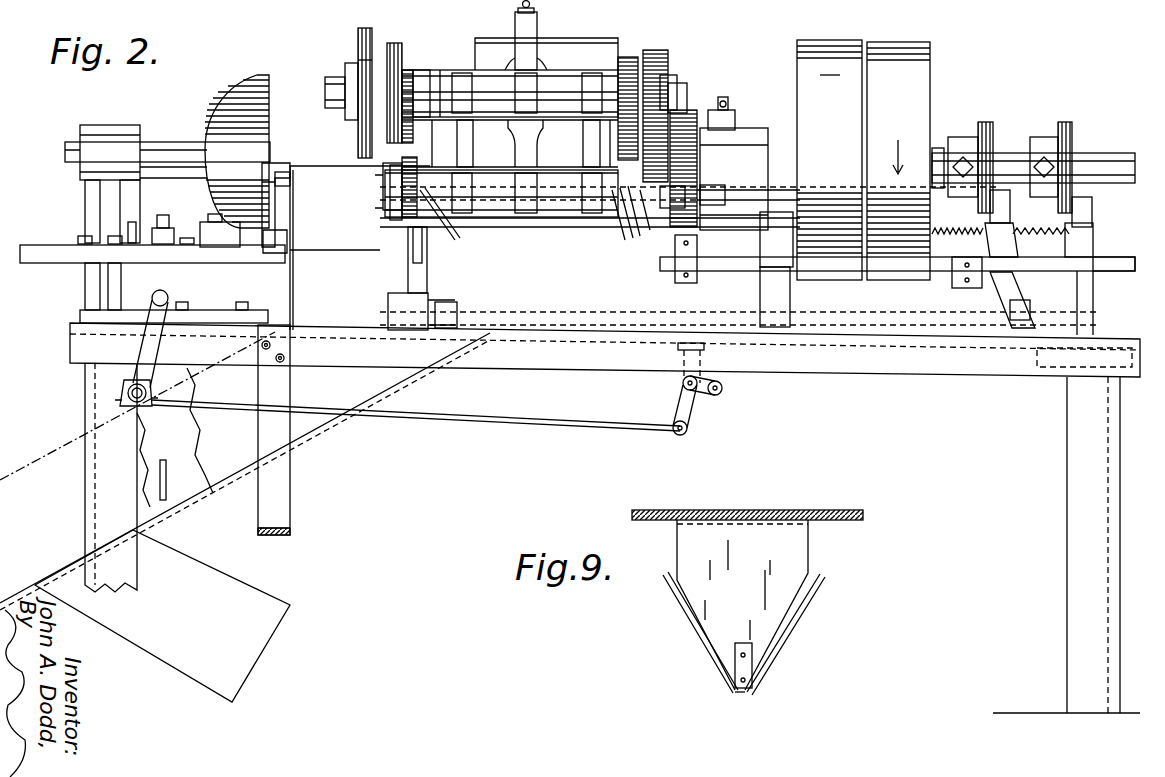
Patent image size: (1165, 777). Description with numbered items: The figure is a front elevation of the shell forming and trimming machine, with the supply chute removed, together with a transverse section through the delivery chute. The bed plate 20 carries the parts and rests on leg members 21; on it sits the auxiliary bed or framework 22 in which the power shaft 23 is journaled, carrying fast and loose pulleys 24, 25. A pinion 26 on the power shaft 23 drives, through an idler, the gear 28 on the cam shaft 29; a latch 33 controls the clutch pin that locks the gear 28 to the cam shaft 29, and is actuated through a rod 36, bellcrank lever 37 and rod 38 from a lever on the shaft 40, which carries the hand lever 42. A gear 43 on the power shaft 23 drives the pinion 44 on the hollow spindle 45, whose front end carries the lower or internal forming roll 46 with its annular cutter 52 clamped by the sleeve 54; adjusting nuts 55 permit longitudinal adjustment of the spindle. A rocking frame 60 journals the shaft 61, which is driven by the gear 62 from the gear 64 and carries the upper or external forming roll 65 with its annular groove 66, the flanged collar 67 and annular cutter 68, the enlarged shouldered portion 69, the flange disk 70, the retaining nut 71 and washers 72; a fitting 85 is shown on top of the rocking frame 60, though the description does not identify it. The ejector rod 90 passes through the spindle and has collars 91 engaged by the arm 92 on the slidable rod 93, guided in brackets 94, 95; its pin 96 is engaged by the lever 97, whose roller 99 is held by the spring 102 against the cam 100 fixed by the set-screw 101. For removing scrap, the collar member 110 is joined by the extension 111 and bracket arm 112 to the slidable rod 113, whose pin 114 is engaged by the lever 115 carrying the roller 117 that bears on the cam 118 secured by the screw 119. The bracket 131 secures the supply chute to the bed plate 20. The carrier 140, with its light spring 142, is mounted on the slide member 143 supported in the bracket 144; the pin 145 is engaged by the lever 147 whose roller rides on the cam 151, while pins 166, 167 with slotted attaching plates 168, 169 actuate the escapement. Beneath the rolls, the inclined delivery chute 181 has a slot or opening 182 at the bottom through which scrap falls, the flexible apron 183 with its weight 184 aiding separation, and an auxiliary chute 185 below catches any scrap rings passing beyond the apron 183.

In FIG. 2, the bed plate 20 is at (942, 372).
In FIG. 9, the bed plate 20 is at (645, 510).
In FIG. 2, the leg members 21 is at (88, 402).
In FIG. 2, the auxiliary bed or framework 22 is at (545, 248).
In FIG. 2, the power shaft 23 is at (938, 150).
In FIG. 2, the fast pulley 24 is at (815, 40).
In FIG. 2, the loose pulley 25 is at (893, 42).
In FIG. 2, the pinion 26 is at (695, 112).
In FIG. 2, the gear 28 is at (660, 58).
In FIG. 2, the cam shaft 29 is at (168, 142).
In FIG. 2, the latch 33 is at (740, 278).
In FIG. 2, the rod 36 is at (708, 355).
In FIG. 2, the bellcrank lever 37 is at (693, 405).
In FIG. 2, the rod 38 is at (496, 414).
In FIG. 2, the shaft 40 is at (126, 390).
In FIG. 2, the hand lever 42 is at (152, 300).
In FIG. 2, the gear 43 is at (720, 108).
In FIG. 2, the pinion 44 is at (670, 210).
In FIG. 2, the hollow spindle 45 is at (645, 232).
In FIG. 2, the lower or internal forming roll 46 is at (378, 212).
In FIG. 2, the annular cutter 52 is at (392, 222).
In FIG. 2, the sleeve 54 is at (392, 225).
In FIG. 2, the adjusting nuts 55 is at (445, 235).
In FIG. 2, the rocking frame 60 is at (555, 50).
In FIG. 2, the shaft 61 is at (685, 88).
In FIG. 2, the gear 62 is at (630, 57).
In FIG. 2, the gear 64 is at (670, 80).
In FIG. 2, the upper or external forming roll 65 is at (392, 43).
In FIG. 2, the annular groove 66 is at (360, 60).
In FIG. 2, the flanged collar 67 is at (416, 72).
In FIG. 2, the annular cutter 68 is at (408, 70).
In FIG. 2, the enlarged shouldered portion 69 is at (440, 70).
In FIG. 2, the flange disk 70 is at (362, 30).
In FIG. 2, the retaining nut 71 is at (326, 80).
In FIG. 2, the washers 72 is at (348, 68).
In FIG. 2, the oil cup 85 is at (518, 14).
In FIG. 2, the ejector rod 90 is at (735, 204).
In FIG. 2, the collars 91 is at (730, 190).
In FIG. 2, the arm 92 is at (776, 239).
In FIG. 2, the slidable rod 93 is at (800, 285).
In FIG. 2, the bracket 94 is at (675, 280).
In FIG. 2, the bracket 95 is at (952, 285).
In FIG. 2, the pin 96 is at (1100, 262).
In FIG. 2, the lever 97 is at (1095, 235).
In FIG. 2, the roller 99 is at (1092, 205).
In FIG. 2, the cam 100 is at (1066, 130).
In FIG. 2, the set-screw 101 is at (1045, 157).
In FIG. 2, the spring 102 is at (960, 222).
In FIG. 2, the collar member 110 is at (405, 222).
In FIG. 2, the extension 111 is at (425, 250).
In FIG. 2, the bracket arm 112 is at (390, 292).
In FIG. 2, the slidable rod 113 is at (546, 315).
In FIG. 2, the pin 114 is at (1030, 315).
In FIG. 2, the lever 115 is at (1015, 245).
In FIG. 2, the roller 117 is at (1010, 205).
In FIG. 2, the cam 118 is at (985, 122).
In FIG. 2, the screw 119 is at (965, 157).
In FIG. 2, the bracket 131 is at (292, 517).
In FIG. 2, the carrier 140 is at (274, 163).
In FIG. 2, the light spring 142 is at (286, 165).
In FIG. 2, the slide member 143 is at (70, 262).
In FIG. 2, the bracket 144 is at (250, 292).
In FIG. 2, the pin 145 is at (120, 232).
In FIG. 2, the lever 147 is at (182, 238).
In FIG. 2, the cam 151 is at (238, 112).
In FIG. 2, the pin 166 is at (128, 228).
In FIG. 2, the pin 167 is at (230, 232).
In FIG. 2, the slotted attaching plate 168 is at (100, 232).
In FIG. 2, the slotted attaching plate 169 is at (185, 240).
In FIG. 2, the inclined delivery chute 181 is at (48, 463).
In FIG. 9, the inclined delivery chute 181 is at (793, 627).
In FIG. 2, the slot or opening 182 is at (190, 492).
In FIG. 9, the slot or opening 182 is at (742, 695).
In FIG. 2, the flexible apron 183 is at (160, 440).
In FIG. 9, the flexible apron 183 is at (800, 562).
In FIG. 2, the weight 184 is at (158, 495).
In FIG. 9, the weight 184 is at (752, 667).
In FIG. 2, the auxiliary chute 185 is at (265, 642).